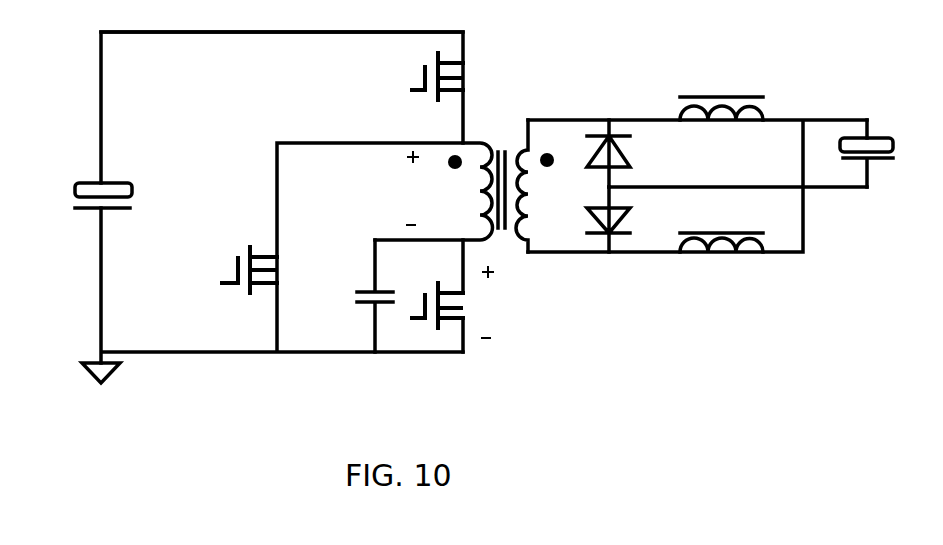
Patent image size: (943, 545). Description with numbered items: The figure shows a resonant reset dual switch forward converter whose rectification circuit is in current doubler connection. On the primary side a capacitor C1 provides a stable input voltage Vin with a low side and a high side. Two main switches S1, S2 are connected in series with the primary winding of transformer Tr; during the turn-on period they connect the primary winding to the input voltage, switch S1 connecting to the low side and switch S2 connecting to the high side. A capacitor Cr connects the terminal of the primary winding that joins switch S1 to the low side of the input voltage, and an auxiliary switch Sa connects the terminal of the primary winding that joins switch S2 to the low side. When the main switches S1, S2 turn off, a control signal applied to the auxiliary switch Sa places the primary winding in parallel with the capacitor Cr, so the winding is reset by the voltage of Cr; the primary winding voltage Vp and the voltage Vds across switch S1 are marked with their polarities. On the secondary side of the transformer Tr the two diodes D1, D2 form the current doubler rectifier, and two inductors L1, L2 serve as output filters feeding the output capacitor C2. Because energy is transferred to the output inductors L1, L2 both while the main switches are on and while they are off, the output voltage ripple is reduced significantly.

The input voltage Vin is at (282, 48).
The capacitor C1 is at (76, 201).
The auxiliary switch Sa is at (228, 270).
The main switch S2 is at (419, 76).
The main switch S1 is at (432, 296).
The capacitor Cr is at (360, 296).
The primary winding voltage Vp is at (421, 188).
The drain-source voltage Vds is at (502, 302).
The transformer Tr is at (477, 186).
The rectifier diode D2 is at (608, 131).
The rectifier diode D1 is at (607, 241).
The inductor L1 is at (725, 93).
The inductor L2 is at (721, 263).
The output capacitor C2 is at (866, 129).